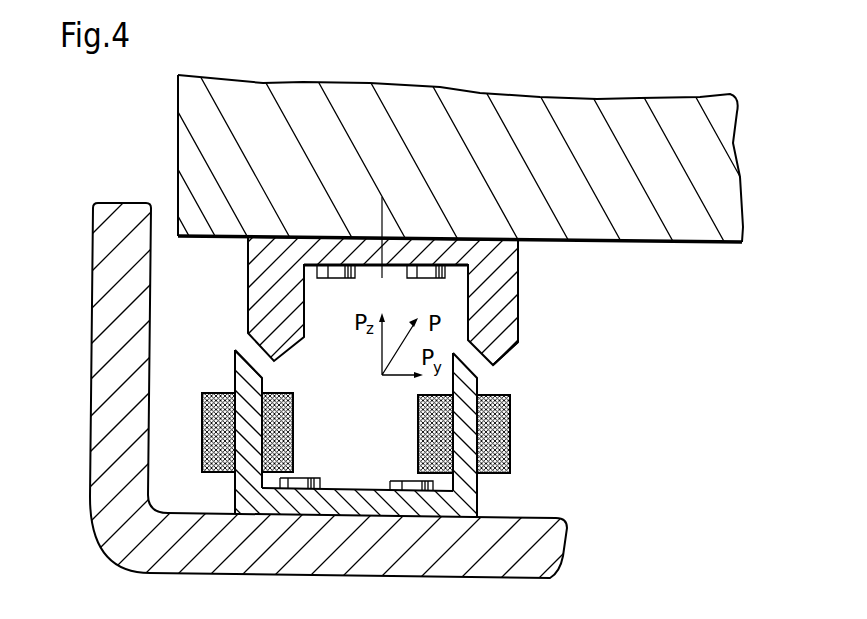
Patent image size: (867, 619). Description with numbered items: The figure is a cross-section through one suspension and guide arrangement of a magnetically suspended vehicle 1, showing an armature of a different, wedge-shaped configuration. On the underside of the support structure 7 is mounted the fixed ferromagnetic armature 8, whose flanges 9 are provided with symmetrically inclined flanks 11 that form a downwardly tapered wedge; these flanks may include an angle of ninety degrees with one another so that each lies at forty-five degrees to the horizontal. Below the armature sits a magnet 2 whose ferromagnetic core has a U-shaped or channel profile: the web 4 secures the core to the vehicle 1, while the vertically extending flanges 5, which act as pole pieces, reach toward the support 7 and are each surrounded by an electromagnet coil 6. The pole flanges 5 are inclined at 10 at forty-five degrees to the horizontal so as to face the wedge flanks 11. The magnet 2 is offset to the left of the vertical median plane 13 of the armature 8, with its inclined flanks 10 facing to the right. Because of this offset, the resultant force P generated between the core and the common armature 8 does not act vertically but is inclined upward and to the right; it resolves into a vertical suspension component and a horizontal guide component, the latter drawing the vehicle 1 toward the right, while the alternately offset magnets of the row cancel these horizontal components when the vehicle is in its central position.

The suspended vehicle 1 is at (549, 568).
The magnet 2 is at (511, 446).
The core web 4 is at (460, 504).
The flange 5 is at (246, 379).
The electromagnet coil 6 is at (512, 417).
The support structure 7 is at (706, 231).
The armature 8 is at (520, 302).
The armature flange 9 is at (506, 337).
The inclined flank of pole piece 10 is at (471, 364).
The inclined flank 11 is at (505, 356).
The vertical median plane 13 is at (383, 208).